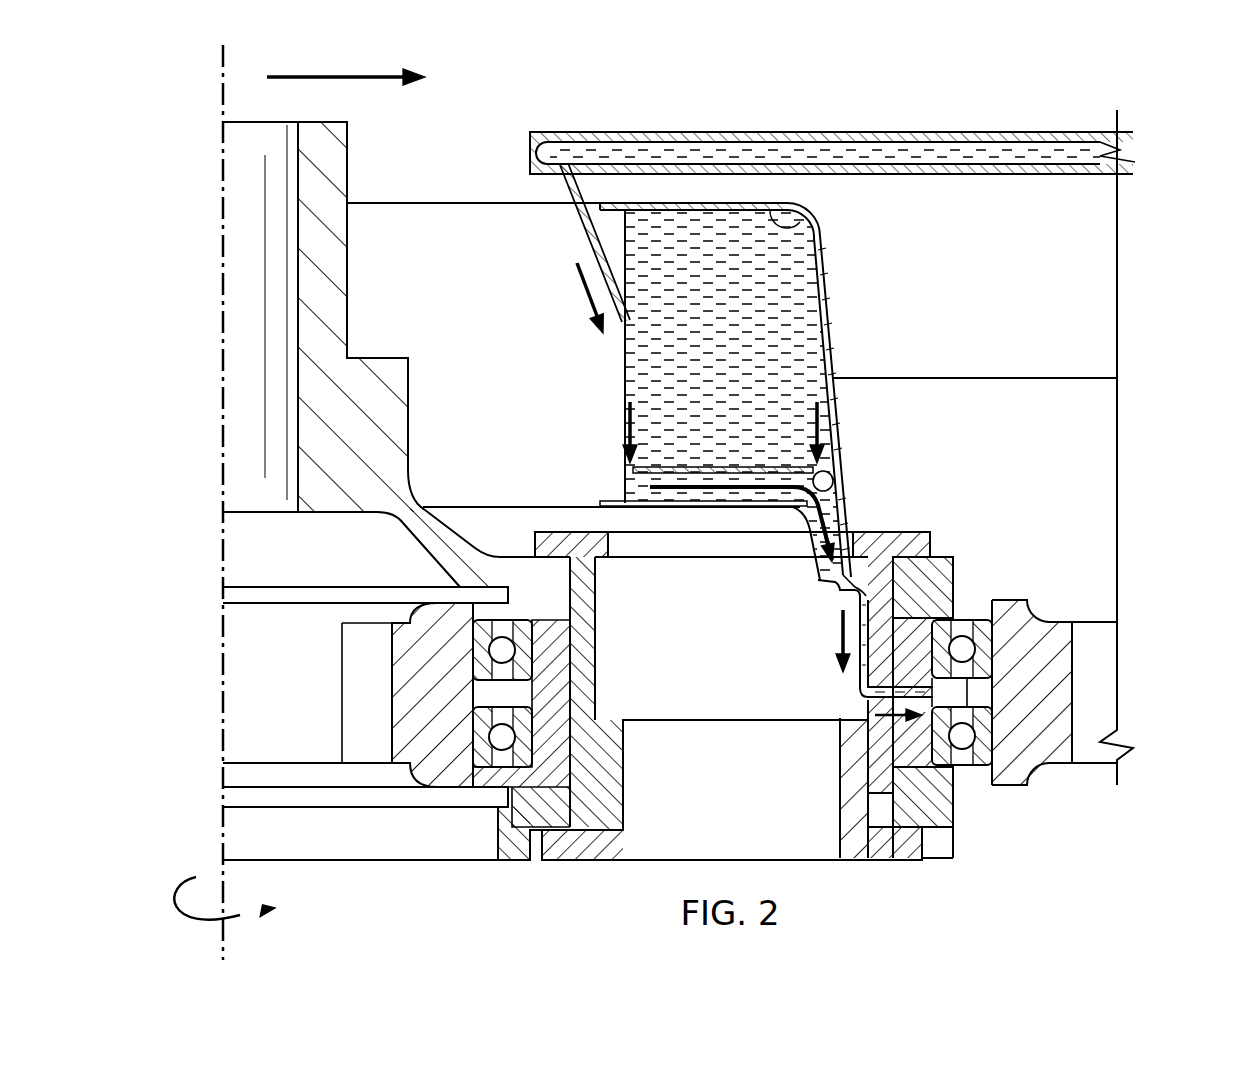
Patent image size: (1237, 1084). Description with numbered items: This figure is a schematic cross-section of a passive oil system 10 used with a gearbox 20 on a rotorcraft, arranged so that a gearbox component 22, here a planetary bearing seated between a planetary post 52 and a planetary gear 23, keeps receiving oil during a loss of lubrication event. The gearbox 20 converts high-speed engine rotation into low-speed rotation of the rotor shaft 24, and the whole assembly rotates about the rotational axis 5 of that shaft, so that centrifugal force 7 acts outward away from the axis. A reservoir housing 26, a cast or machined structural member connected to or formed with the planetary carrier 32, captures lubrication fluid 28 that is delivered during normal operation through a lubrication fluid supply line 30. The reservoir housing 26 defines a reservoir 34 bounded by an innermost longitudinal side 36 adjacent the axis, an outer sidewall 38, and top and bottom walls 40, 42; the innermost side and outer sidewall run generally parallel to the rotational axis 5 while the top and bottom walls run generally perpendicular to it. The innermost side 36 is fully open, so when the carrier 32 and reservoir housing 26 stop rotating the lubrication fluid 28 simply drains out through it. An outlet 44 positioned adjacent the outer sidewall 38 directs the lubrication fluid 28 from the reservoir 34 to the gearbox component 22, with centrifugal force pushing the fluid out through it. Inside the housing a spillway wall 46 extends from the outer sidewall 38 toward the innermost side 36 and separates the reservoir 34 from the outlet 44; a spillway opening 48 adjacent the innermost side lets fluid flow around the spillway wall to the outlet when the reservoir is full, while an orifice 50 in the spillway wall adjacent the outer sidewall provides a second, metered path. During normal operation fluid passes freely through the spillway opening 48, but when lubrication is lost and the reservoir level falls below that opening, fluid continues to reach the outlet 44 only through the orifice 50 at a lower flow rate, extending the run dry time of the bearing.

The rotational axis 5 is at (222, 714).
The centrifugal force 7 is at (380, 82).
The passive oil system 10 is at (1170, 275).
The gearbox 20 is at (1153, 833).
The gearbox component 22 is at (980, 617).
The planetary gear 23 is at (1053, 627).
The rotor shaft 24 is at (340, 258).
The reservoir housing 26 is at (834, 288).
The lubrication fluid 28 is at (590, 250).
The lubrication fluid supply line 30 is at (877, 132).
The planetary carrier 32 is at (440, 527).
The reservoir 34 is at (734, 394).
The innermost longitudinal side 36 is at (625, 360).
The outer sidewall 38 is at (833, 358).
The top wall 40 is at (796, 214).
The bottom wall 42 is at (750, 510).
The outlet 44 is at (847, 578).
The spillway wall 46 is at (717, 467).
The spillway opening 48 is at (633, 467).
The orifice 50 is at (835, 482).
The planetary post 52 is at (880, 778).